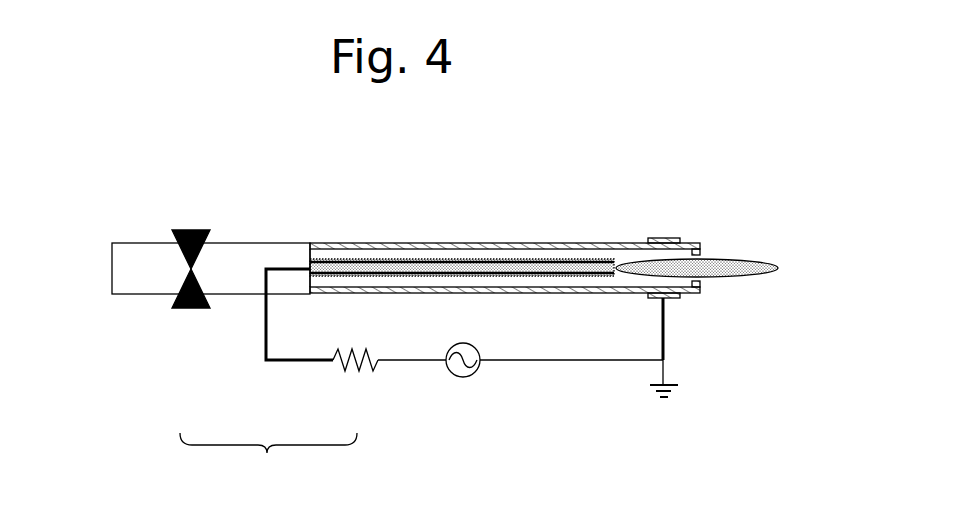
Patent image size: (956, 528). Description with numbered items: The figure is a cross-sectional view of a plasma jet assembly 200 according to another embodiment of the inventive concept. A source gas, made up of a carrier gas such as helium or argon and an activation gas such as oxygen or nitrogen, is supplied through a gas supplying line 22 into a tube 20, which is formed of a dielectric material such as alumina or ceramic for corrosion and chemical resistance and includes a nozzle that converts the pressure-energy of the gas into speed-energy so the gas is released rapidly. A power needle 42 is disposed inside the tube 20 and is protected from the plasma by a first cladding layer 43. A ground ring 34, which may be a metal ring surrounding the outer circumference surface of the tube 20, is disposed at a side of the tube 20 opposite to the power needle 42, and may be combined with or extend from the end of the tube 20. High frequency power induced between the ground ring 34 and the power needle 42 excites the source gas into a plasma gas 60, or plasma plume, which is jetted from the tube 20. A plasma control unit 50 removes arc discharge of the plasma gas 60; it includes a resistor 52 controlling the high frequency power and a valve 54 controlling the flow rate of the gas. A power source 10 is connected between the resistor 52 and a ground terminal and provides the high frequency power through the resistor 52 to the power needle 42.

The power source 10 is at (462, 378).
The tube 20 is at (355, 243).
The gas supplying line 22 is at (240, 243).
The ground ring 34 is at (665, 238).
The power needle 42 is at (432, 268).
The first cladding layer 43 is at (500, 262).
The plasma control unit 50 is at (268, 454).
The resistor 52 is at (335, 366).
The valve 54 is at (188, 310).
The plasma gas 60 is at (722, 263).
The plasma jet assembly 200 is at (581, 213).